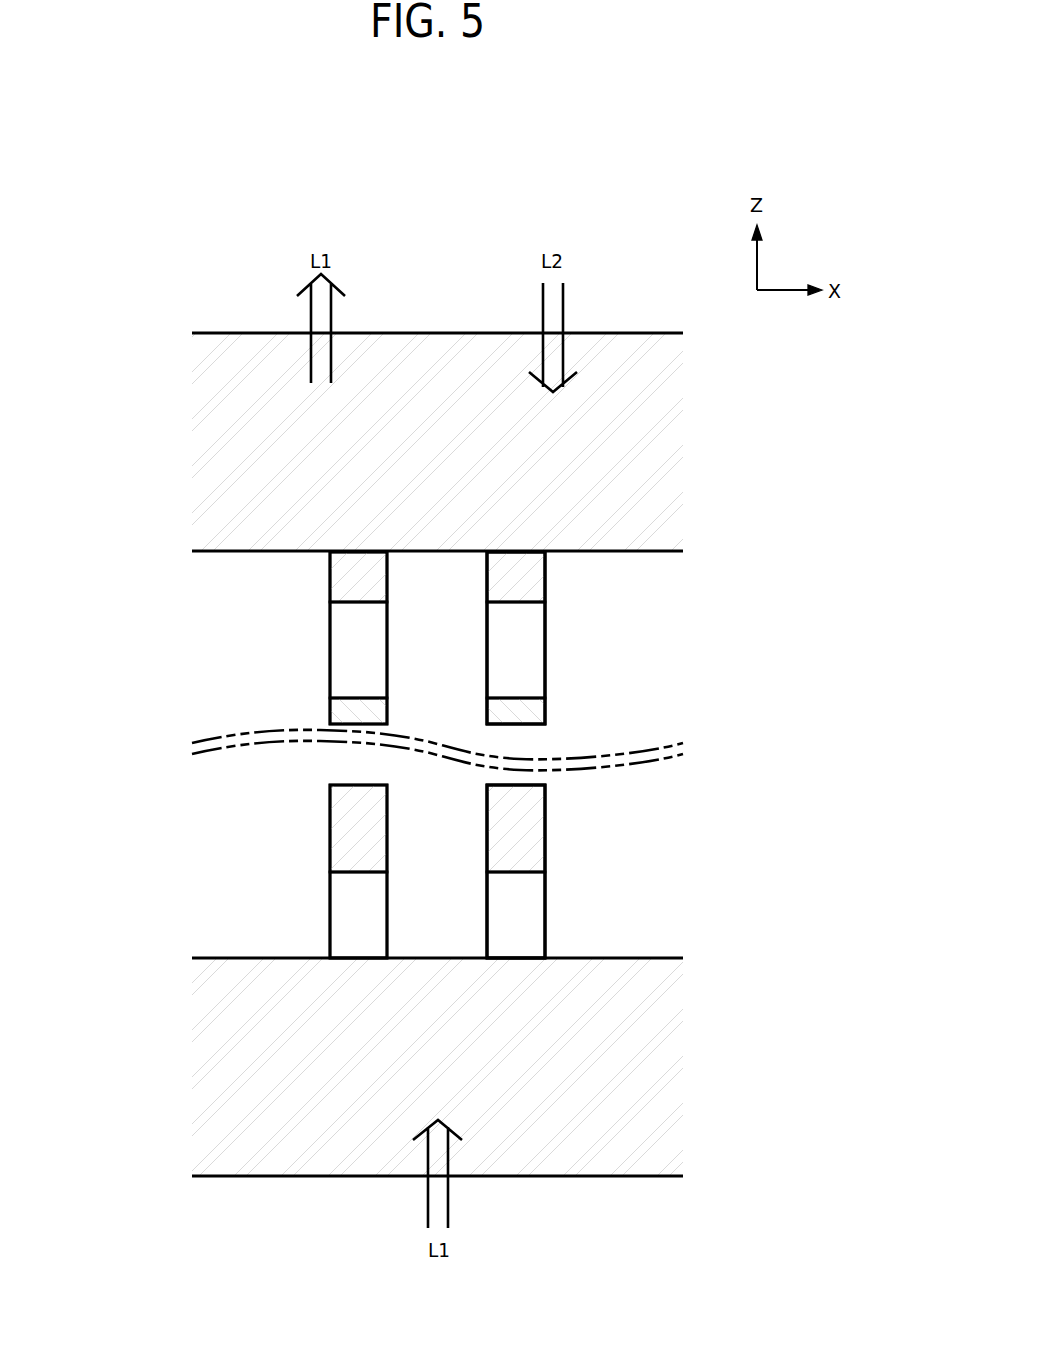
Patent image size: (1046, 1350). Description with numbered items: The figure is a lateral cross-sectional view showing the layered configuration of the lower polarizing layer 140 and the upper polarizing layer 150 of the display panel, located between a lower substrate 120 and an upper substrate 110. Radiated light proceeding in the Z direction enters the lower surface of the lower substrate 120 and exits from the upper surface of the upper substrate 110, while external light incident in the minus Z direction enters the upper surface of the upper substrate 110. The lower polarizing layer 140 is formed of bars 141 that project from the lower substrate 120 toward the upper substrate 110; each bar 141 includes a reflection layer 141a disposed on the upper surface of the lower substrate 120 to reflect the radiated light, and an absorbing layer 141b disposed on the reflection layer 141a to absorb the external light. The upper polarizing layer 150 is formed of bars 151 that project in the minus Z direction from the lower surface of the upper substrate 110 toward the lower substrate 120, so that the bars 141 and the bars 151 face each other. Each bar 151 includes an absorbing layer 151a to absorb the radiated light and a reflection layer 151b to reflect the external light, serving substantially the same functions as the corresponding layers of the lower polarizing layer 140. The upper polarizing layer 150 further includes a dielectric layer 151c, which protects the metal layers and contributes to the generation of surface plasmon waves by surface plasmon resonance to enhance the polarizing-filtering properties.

The upper substrate 110 is at (213, 441).
The lower substrate 120 is at (213, 1060).
The upper polarizing layer 150 is at (288, 642).
The bar 151 is at (656, 583).
The absorbing layer 151a is at (545, 576).
The reflection layer 151b is at (545, 648).
The dielectric layer 151c is at (545, 710).
The lower polarizing layer 140 is at (288, 876).
The bar 141 is at (656, 825).
The reflection layer 141a is at (545, 907).
The absorbing layer 141b is at (545, 828).